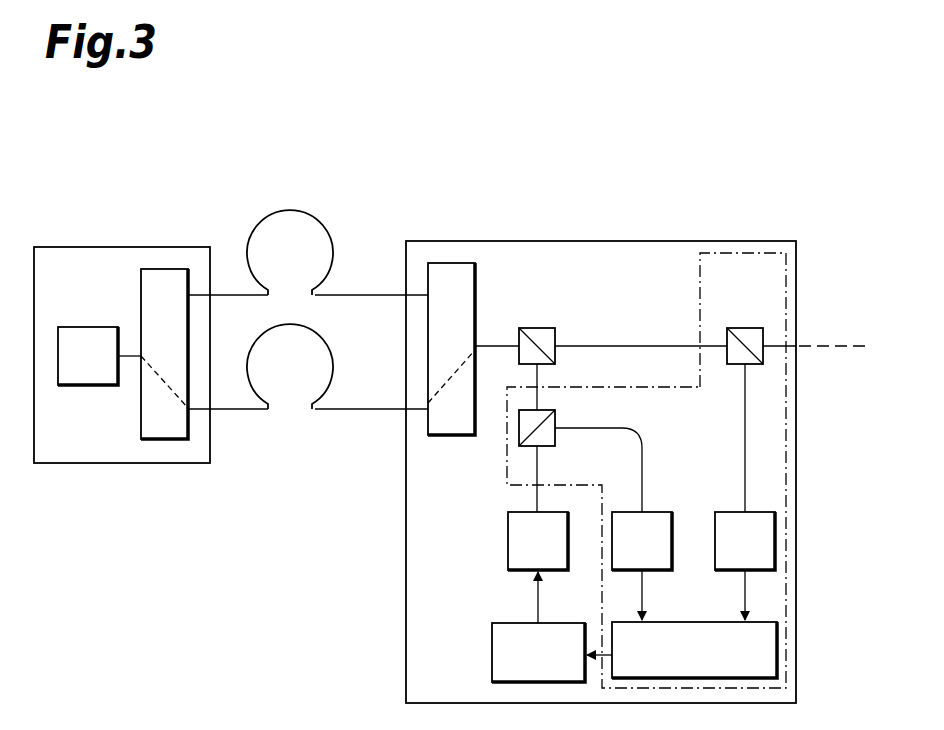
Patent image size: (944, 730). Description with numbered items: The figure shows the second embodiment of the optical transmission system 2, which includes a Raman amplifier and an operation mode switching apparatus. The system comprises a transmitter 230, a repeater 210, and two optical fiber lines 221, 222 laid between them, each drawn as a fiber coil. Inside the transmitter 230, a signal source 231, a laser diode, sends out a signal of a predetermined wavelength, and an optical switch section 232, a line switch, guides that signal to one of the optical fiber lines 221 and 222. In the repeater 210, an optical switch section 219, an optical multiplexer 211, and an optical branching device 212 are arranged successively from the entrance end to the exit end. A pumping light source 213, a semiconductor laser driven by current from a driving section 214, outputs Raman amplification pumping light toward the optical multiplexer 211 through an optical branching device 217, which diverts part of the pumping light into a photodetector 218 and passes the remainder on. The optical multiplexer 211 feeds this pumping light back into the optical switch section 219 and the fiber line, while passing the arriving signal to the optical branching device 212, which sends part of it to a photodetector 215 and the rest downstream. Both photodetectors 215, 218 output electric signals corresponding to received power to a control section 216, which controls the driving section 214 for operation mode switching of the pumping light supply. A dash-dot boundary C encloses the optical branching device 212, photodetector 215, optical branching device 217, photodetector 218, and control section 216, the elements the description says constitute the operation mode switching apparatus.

The optical transmission system 2 is at (449, 151).
The repeater 210 is at (695, 241).
The optical multiplexer 211 is at (535, 328).
The optical branching device 212 is at (738, 328).
The pumping light source 213 is at (508, 540).
The driving section 214 is at (492, 655).
The photodetector 215 is at (730, 512).
The control section 216 is at (777, 652).
The optical branching device 217 is at (519, 440).
The photodetector 218 is at (625, 512).
The optical switch section 219 is at (475, 283).
The optical fiber line 221 is at (328, 347).
The optical fiber line 222 is at (328, 232).
The transmitter 230 is at (132, 247).
The signal source 231 is at (87, 385).
The optical switch section 232 is at (141, 282).
The control circuit C is at (786, 428).